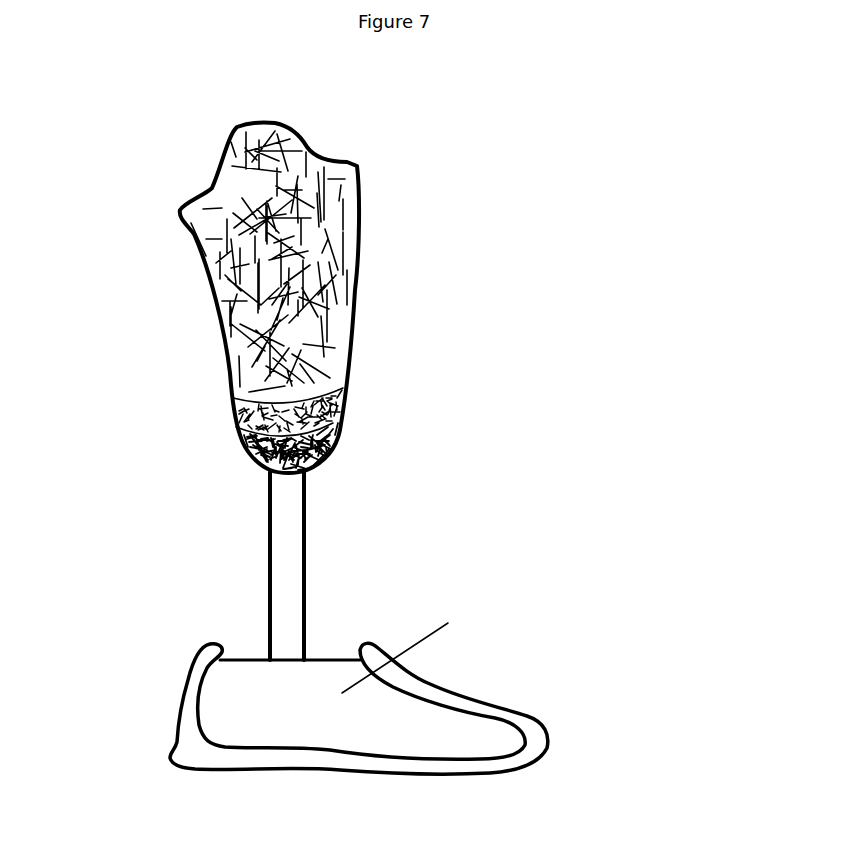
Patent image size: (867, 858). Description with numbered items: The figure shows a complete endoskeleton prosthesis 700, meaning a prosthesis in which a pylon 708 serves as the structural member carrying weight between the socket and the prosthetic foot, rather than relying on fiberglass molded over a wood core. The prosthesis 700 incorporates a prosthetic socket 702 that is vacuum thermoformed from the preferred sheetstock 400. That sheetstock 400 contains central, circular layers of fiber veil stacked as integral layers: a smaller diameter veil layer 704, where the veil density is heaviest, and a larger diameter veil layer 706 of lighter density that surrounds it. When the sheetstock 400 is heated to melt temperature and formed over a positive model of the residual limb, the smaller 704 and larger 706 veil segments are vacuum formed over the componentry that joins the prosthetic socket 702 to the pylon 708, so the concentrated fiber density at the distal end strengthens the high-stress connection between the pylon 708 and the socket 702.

The endoskeleton prosthesis 700 is at (537, 139).
The prosthetic socket 702 is at (340, 90).
The preferred sheetstock 400 is at (195, 237).
The larger diameter veil layer 706 is at (233, 408).
The smaller diameter veil layer 704 is at (250, 453).
The pylon 708 is at (322, 538).